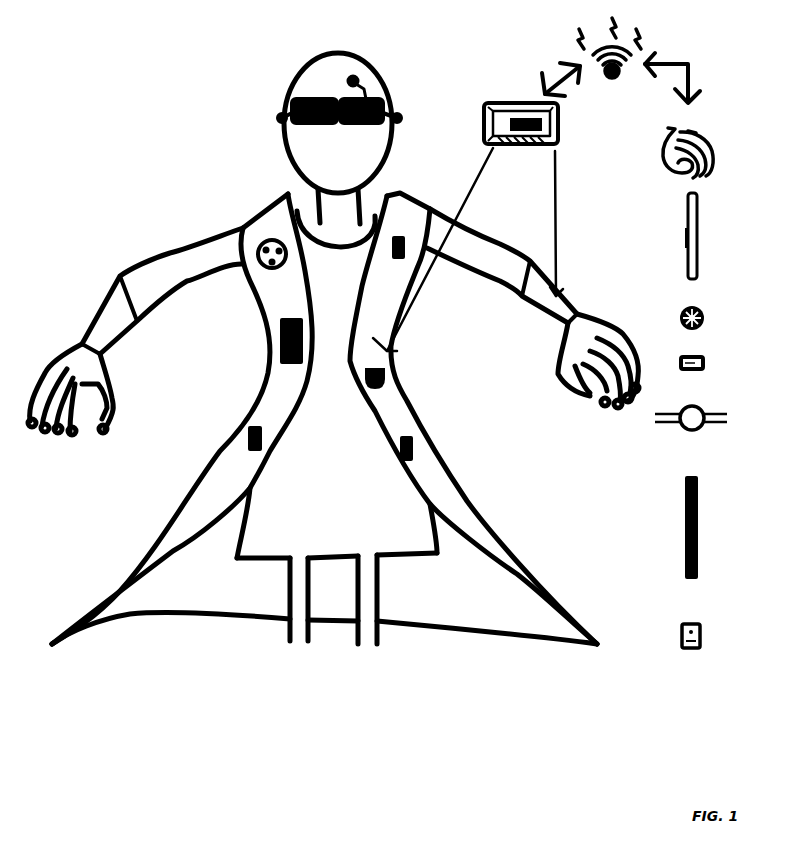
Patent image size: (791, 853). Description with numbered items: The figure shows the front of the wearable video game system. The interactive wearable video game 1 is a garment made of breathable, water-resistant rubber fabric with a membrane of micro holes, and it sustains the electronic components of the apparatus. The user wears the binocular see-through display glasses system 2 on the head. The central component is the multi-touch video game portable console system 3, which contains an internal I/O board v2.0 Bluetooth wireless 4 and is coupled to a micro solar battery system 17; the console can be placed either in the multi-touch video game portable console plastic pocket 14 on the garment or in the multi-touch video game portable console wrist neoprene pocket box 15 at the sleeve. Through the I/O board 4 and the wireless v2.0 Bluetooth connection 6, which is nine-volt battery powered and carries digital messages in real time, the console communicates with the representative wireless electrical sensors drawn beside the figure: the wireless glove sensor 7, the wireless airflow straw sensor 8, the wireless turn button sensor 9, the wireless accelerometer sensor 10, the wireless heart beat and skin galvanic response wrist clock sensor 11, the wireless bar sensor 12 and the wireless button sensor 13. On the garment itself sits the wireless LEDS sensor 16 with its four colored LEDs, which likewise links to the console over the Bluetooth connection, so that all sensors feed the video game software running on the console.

The interactive wearable video game 1 is at (324, 418).
The binocular see-through display glasses system 2 is at (330, 111).
The multi-touch video game portable console system 3 is at (510, 123).
The I/O board v2.0 Bluetooth wireless 4 is at (519, 124).
The wireless v2.0 Bluetooth connection 6 is at (609, 60).
The wireless glove sensor 7 is at (678, 153).
The wireless airflow straw sensor 8 is at (679, 236).
The wireless turn button sensor 9 is at (683, 318).
The wireless accelerometer sensor 10 is at (680, 367).
The wireless heart beat and skin galvanic response wrist clock sensor 11 is at (680, 418).
The wireless bar sensor 12 is at (678, 527).
The wireless button sensor 13 is at (676, 636).
The multi-touch video game portable console plastic pocket 14 is at (370, 368).
The multi-touch video game portable console wrist neoprene pocket box 15 is at (329, 307).
The wireless LEDS sensor 16 is at (275, 265).
The micro solar battery system 17 is at (468, 249).